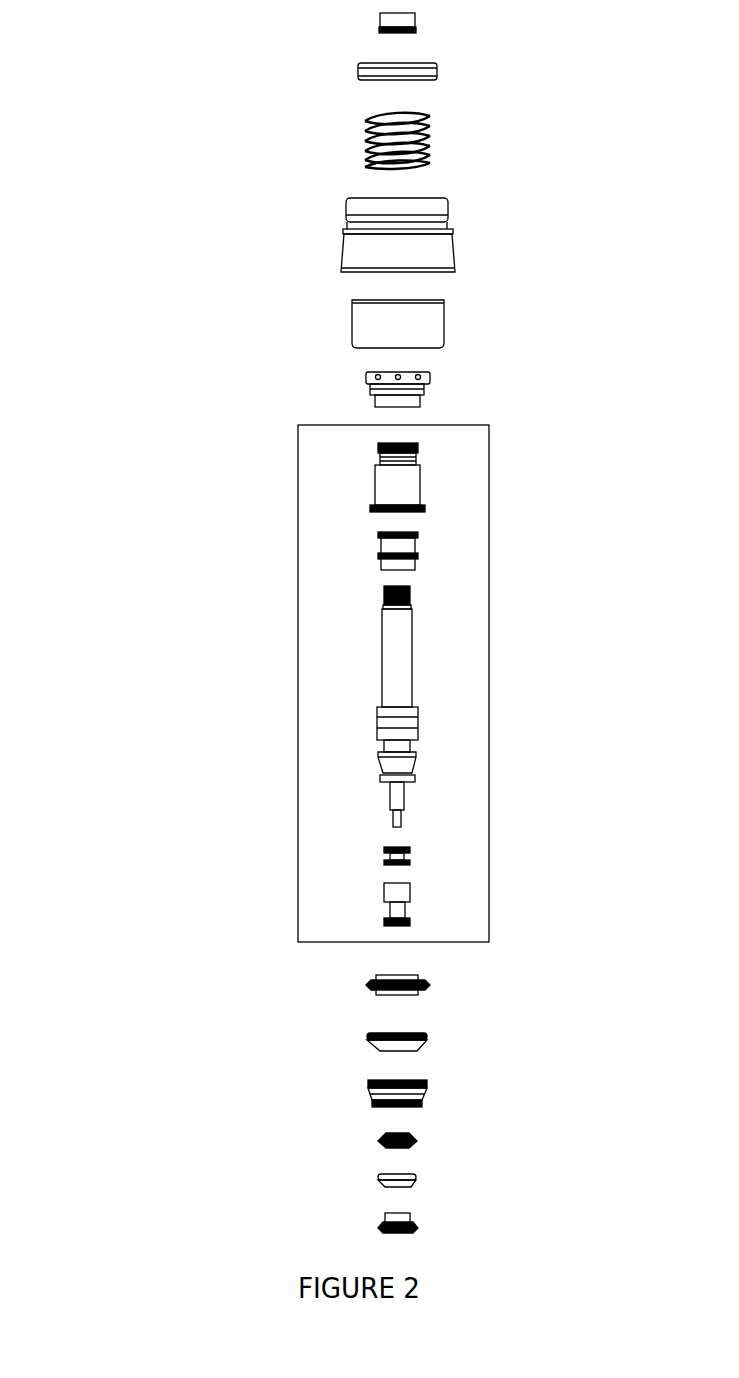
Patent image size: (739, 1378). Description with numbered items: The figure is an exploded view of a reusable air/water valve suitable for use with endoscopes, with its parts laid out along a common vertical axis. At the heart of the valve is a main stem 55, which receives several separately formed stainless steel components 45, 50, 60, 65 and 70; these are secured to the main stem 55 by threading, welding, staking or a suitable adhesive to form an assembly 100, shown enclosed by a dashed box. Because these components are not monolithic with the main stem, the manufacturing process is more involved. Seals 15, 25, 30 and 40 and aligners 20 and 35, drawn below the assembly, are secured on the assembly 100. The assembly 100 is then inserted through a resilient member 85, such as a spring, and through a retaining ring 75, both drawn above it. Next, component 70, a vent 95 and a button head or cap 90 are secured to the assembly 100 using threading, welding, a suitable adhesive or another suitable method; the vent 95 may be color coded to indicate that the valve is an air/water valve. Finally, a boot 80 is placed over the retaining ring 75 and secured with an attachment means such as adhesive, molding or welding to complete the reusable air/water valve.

The seal 15 is at (378, 1228).
The aligner 20 is at (378, 1181).
The seal 25 is at (378, 1143).
The seal 30 is at (367, 1091).
The aligner 35 is at (367, 1039).
The seal 40 is at (366, 986).
The component 45 is at (384, 890).
The component 50 is at (384, 859).
The main stem 55 is at (381, 677).
The component 60 is at (380, 547).
The component 65 is at (375, 489).
The component 70 is at (375, 400).
The retaining ring 75 is at (352, 323).
The boot 80 is at (346, 223).
The resilient member 85 is at (365, 138).
The button head or cap 90 is at (358, 70).
The vent 95 is at (380, 21).
The assembly 100 is at (489, 753).